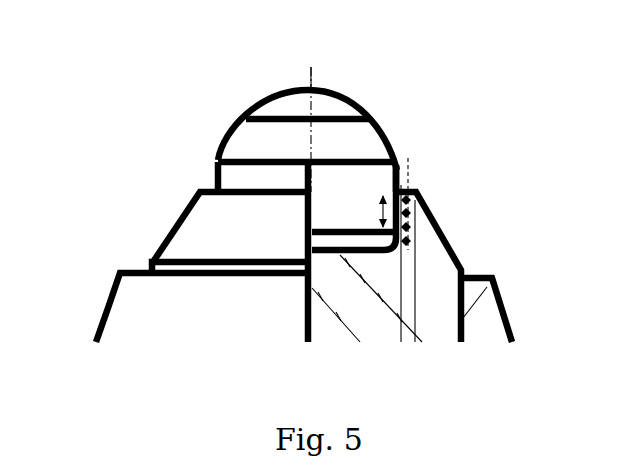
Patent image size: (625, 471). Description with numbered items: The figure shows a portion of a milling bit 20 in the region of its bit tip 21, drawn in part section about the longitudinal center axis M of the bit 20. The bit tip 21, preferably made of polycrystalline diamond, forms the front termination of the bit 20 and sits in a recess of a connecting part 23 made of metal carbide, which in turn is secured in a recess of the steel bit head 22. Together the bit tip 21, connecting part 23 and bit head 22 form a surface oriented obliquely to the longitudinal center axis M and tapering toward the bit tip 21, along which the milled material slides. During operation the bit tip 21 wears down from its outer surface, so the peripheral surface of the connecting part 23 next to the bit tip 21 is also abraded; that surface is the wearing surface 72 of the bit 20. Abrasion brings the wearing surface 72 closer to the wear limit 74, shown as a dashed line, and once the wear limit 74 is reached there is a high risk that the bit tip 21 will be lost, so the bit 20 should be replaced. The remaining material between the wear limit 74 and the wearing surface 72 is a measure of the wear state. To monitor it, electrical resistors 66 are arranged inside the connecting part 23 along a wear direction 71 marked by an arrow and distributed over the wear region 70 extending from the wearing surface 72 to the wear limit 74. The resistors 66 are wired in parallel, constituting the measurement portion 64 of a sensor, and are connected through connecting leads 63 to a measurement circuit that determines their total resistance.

The bit 20 is at (148, 127).
The bit tip 21 is at (260, 107).
The bit head 22 is at (108, 304).
The connecting part 23 is at (175, 221).
The connecting leads 63 is at (402, 280).
The measurement portion 64 is at (433, 212).
The resistors 66 is at (404, 203).
The wear region 70 is at (383, 196).
The wear direction 71 is at (408, 174).
The wearing surface 72 is at (401, 186).
The wear limit 74 is at (420, 233).
The longitudinal center axis M is at (307, 83).